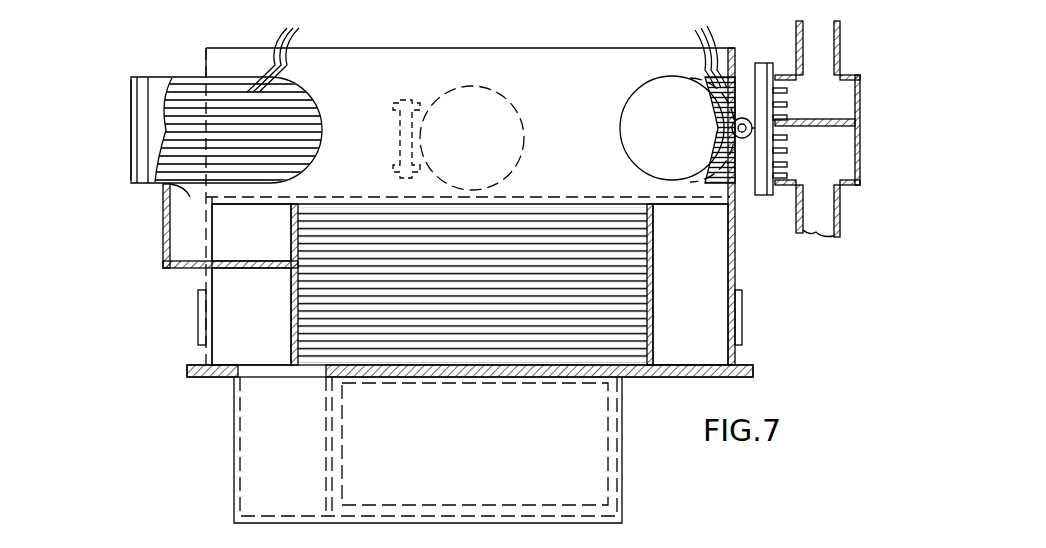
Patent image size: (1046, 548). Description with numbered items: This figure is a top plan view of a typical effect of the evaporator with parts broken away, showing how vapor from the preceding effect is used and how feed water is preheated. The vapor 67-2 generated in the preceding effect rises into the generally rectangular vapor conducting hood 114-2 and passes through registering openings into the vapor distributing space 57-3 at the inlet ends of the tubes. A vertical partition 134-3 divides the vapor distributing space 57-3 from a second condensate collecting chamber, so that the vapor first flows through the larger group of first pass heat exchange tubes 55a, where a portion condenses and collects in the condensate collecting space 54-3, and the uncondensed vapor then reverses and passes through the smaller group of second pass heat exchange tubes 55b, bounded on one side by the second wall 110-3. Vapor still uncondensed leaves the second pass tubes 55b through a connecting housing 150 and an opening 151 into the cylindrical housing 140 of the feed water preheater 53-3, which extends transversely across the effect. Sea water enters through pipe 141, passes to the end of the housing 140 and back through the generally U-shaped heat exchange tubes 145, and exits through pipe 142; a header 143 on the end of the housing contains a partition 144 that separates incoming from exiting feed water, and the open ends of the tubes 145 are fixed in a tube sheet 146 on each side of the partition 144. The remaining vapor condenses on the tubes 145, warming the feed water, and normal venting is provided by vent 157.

The cylindrical housing 140 is at (150, 82).
The heat exchange tubes 145 is at (487, 50).
The vent 157 is at (748, 118).
The pipe 141 is at (842, 36).
The tube sheet 146 is at (787, 106).
The header 143 is at (862, 104).
The partition 144 is at (838, 130).
The pipe 142 is at (843, 232).
The feed water preheater 53-3 is at (128, 140).
The second pass heat exchange tubes 55b is at (528, 232).
The opening 151 is at (195, 188).
The condensate collecting space 54-3 is at (190, 209).
The housing 150 is at (163, 253).
The second wall 110-3 is at (712, 205).
The vertical partition 134-3 is at (228, 268).
The vapor distributing space 57-3 is at (270, 312).
The vapor 67-2 is at (272, 327).
The first pass heat exchange tubes 55a is at (435, 312).
The vapor conducting hood 114-2 is at (625, 500).